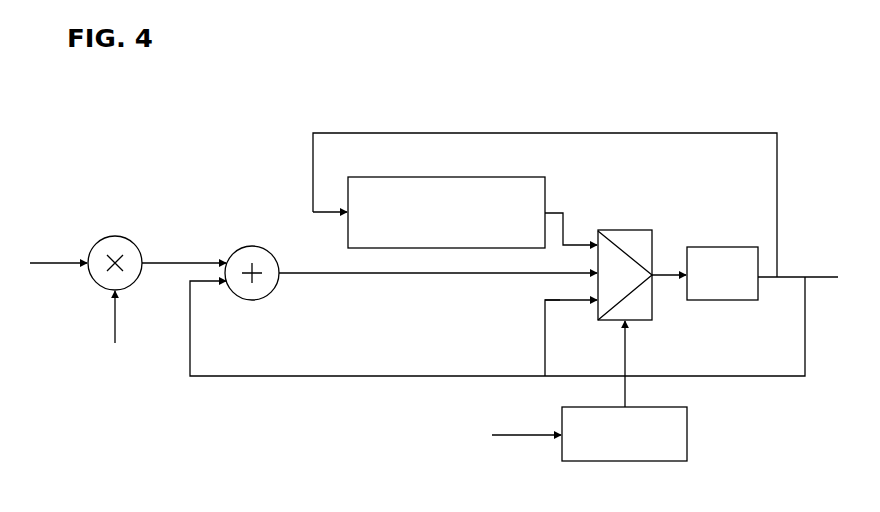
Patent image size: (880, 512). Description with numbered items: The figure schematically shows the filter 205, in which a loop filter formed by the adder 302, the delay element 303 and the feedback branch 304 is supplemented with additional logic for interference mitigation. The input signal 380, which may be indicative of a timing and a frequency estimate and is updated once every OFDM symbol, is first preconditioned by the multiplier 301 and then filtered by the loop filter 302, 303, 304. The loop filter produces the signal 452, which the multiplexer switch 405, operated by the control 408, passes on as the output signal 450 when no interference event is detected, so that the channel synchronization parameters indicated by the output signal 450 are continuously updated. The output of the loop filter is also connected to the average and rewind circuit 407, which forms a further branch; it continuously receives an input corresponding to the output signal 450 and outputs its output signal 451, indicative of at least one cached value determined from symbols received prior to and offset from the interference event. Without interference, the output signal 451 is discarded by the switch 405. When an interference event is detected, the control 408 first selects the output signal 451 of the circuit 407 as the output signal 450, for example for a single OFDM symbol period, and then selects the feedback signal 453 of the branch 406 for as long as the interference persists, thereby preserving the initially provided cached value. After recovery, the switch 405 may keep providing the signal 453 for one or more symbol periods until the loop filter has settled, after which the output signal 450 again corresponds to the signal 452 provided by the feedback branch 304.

The filter 205 is at (704, 49).
The input signal 380 is at (51, 260).
The multiplier 301 is at (116, 238).
The loop filter adder 302 is at (250, 247).
The signal 452 is at (444, 279).
The average and rewind circuit 407 is at (503, 181).
The output signal of the average and rewind circuit 451 is at (572, 222).
The multiplexer switch 405 is at (628, 231).
The loop filter delay element 303 is at (711, 249).
The output signal 450 is at (822, 286).
The feedback branch 304 is at (425, 375).
The branch 406 is at (545, 335).
The feedback signal 453 is at (537, 308).
The control 408 is at (675, 461).